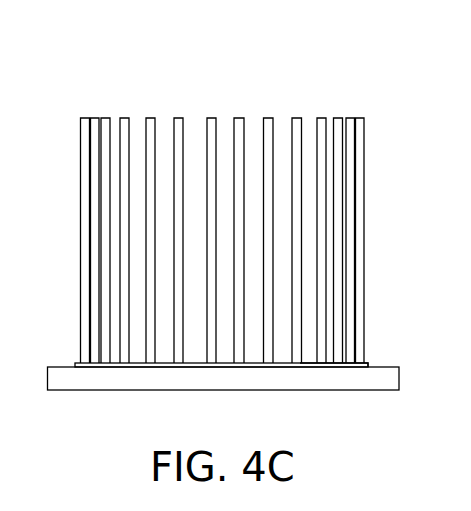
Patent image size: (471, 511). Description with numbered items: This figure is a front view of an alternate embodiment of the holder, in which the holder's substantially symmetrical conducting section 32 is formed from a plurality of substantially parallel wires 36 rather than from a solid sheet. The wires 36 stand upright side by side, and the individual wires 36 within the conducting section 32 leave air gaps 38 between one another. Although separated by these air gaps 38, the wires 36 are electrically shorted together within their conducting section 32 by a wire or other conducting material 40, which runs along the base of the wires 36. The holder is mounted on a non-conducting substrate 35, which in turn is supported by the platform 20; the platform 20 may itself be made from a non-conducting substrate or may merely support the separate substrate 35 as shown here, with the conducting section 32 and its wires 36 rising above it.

The platform 20 is at (337, 377).
The conducting section 32 is at (254, 201).
The non-conducting substrate 35 is at (369, 362).
The wire 36 is at (150, 119).
The air gap 38 is at (309, 117).
The conducting material 40 is at (75, 357).